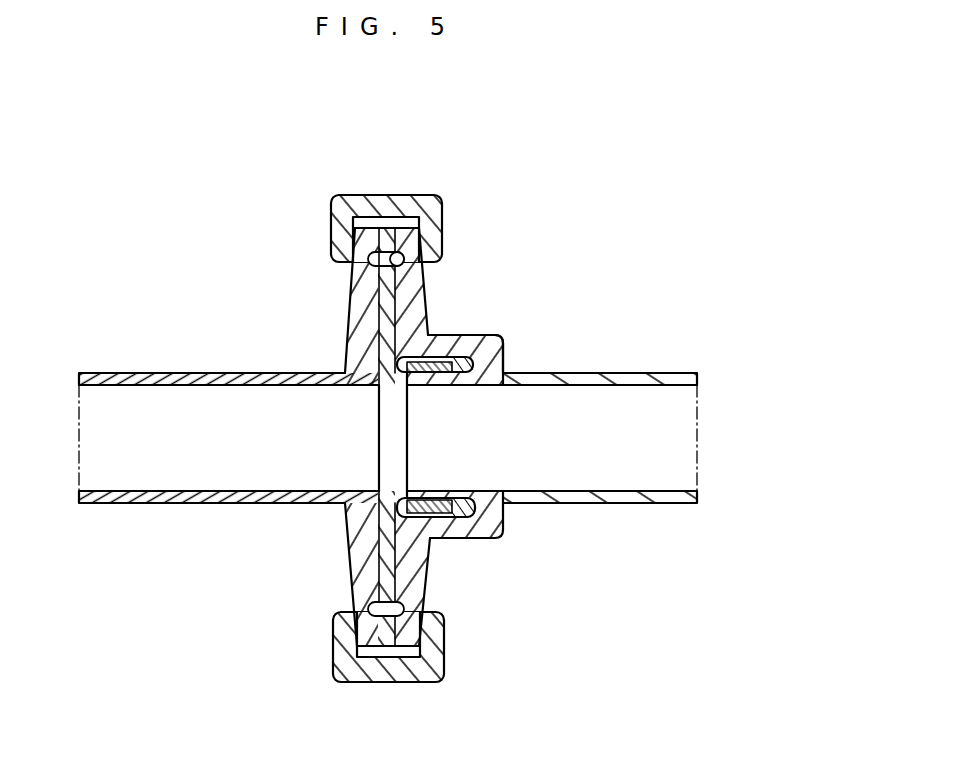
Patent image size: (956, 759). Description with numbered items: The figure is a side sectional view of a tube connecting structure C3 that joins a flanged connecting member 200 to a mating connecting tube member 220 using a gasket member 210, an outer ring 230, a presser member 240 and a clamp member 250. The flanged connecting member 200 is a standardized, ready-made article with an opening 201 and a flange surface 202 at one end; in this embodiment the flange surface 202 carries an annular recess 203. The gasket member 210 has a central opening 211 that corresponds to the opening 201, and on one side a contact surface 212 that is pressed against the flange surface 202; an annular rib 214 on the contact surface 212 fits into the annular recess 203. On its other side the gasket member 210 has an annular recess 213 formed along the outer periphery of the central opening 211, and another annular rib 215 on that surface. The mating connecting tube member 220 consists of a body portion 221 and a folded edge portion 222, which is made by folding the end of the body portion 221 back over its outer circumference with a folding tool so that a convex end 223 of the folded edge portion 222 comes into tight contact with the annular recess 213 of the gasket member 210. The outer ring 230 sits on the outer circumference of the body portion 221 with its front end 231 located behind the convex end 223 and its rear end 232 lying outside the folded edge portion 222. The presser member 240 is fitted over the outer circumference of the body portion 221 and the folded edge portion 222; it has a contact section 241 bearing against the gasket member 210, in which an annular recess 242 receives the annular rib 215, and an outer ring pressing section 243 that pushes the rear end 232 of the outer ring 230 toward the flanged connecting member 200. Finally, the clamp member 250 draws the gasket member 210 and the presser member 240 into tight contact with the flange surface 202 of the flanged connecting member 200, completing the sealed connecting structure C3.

The flanged connecting member 200 is at (136, 374).
The opening 201 is at (372, 446).
The flange surface 202 is at (350, 535).
The annular recess 203 is at (363, 620).
The gasket member 210 is at (345, 196).
The central opening 211 is at (388, 432).
The contact surface 212 is at (372, 368).
The annular recess 213 is at (443, 334).
The annular rib 214 is at (366, 259).
The annular rib 215 is at (404, 277).
The mating connecting tube member 220 is at (660, 373).
The body portion 221 is at (608, 503).
The folded edge portion 222 is at (431, 520).
The convex end 223 is at (390, 487).
The outer ring 230 is at (470, 525).
The seal ring 231 is at (406, 376).
The rear end 232 is at (500, 348).
The presser member 240 is at (507, 528).
The contact section 241 is at (405, 275).
The annular recess 242 is at (418, 235).
The outer ring pressing section 243 is at (478, 510).
The clamp member 250 is at (421, 193).
The connecting structure C3 is at (455, 196).